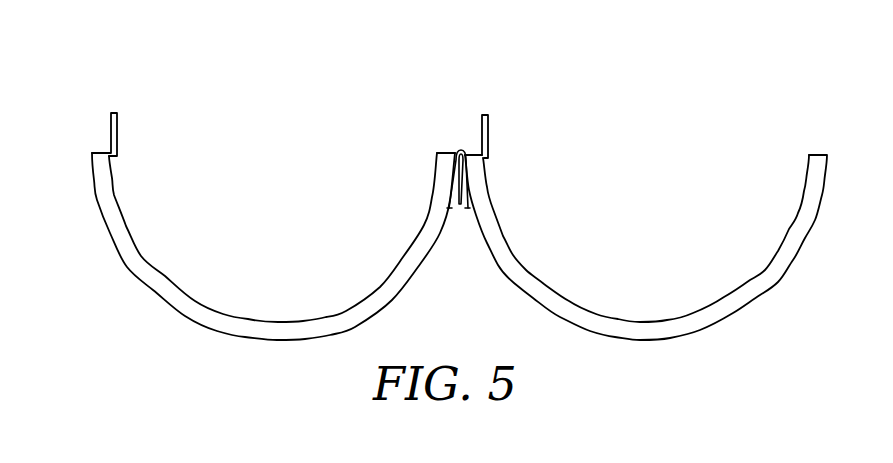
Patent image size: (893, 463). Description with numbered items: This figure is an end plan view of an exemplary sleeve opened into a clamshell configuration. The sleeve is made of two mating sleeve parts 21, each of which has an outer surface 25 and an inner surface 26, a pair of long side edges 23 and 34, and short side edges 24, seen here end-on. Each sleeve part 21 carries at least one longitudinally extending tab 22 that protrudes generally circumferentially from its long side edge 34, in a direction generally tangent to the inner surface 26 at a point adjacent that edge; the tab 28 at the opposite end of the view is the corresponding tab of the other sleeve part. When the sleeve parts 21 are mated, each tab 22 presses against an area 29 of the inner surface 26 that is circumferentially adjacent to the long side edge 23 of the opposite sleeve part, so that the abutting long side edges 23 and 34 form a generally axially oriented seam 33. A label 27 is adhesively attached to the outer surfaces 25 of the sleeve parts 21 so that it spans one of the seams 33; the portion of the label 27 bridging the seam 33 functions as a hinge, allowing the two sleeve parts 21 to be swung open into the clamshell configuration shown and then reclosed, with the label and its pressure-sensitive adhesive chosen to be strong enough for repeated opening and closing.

The sleeve part 21 is at (437, 198).
The tab 22 is at (489, 131).
The long side edge 23 is at (437, 153).
The short side edge 24 is at (650, 198).
The outer surface 25 is at (135, 277).
The inner surface 26 is at (244, 226).
The label 27 is at (460, 210).
The tab of left underwire 28 is at (110, 128).
The area 29 is at (807, 172).
The seam 33 is at (441, 172).
The long side edge 34 is at (470, 153).